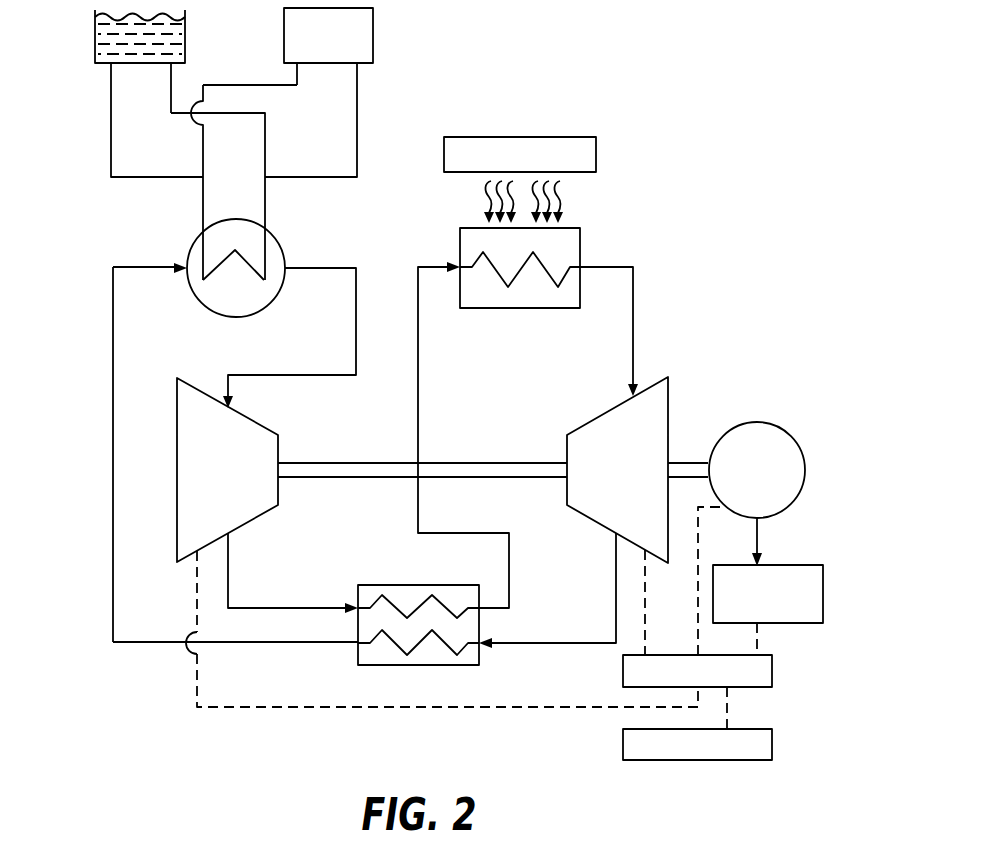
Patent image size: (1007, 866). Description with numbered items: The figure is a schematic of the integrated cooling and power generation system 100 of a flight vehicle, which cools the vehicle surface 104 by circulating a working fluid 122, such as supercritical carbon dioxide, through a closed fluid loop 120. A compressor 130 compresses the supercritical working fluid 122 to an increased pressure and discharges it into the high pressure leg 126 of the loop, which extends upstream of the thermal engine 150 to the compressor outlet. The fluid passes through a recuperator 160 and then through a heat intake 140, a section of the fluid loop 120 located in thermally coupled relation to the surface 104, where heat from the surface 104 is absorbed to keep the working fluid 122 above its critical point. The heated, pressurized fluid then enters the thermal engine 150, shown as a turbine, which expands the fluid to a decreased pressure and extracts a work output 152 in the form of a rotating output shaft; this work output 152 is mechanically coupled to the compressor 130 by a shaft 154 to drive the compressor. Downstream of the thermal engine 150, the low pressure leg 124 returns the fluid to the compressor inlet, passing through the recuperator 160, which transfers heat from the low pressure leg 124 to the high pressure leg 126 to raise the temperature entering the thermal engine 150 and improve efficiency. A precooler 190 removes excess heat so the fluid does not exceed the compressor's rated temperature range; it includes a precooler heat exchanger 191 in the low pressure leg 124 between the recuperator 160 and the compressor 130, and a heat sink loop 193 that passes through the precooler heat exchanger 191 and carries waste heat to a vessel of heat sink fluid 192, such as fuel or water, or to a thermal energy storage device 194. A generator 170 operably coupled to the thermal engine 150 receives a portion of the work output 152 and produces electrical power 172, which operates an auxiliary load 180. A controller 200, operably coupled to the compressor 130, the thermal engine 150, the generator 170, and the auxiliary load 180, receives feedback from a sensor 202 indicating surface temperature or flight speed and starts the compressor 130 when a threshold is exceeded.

The system 100 is at (87, 282).
The surface 104 is at (598, 154).
The fluid loop 120 is at (102, 486).
The working fluid 122 is at (113, 347).
The low pressure leg 124 is at (255, 654).
The high pressure leg 126 is at (296, 596).
The compressor 130 is at (248, 432).
The heat intake 140 is at (582, 253).
The thermal engine 150 is at (668, 408).
The work output 152 is at (692, 462).
The shaft 154 is at (472, 467).
The recuperator 160 is at (418, 667).
The generator 170 is at (805, 466).
The electrical power 172 is at (758, 538).
The auxiliary load 180 is at (825, 592).
The precooler 190 is at (66, 200).
The precooler heat exchanger 191 is at (192, 248).
The heat sink fluid 192 is at (95, 40).
The heat sink loop 193 is at (263, 203).
The thermal energy storage device 194 is at (374, 36).
The controller 200 is at (774, 672).
The sensor 202 is at (774, 746).